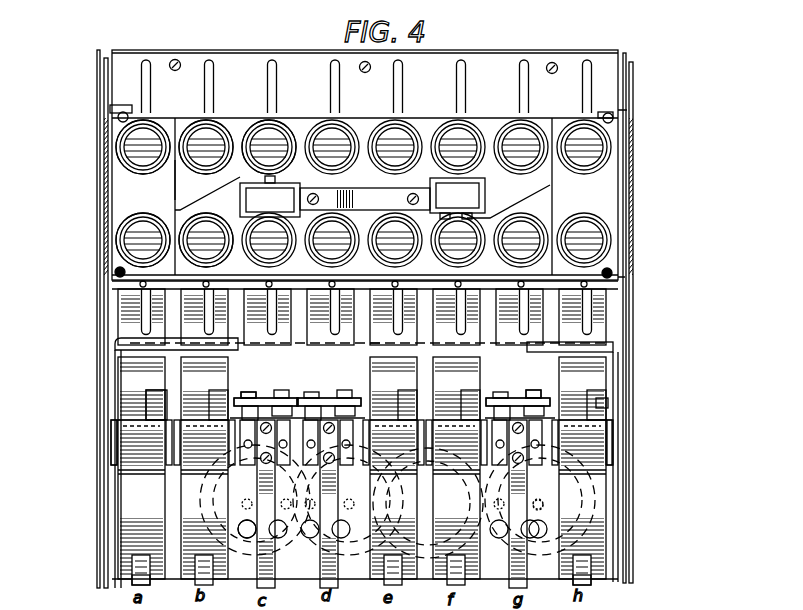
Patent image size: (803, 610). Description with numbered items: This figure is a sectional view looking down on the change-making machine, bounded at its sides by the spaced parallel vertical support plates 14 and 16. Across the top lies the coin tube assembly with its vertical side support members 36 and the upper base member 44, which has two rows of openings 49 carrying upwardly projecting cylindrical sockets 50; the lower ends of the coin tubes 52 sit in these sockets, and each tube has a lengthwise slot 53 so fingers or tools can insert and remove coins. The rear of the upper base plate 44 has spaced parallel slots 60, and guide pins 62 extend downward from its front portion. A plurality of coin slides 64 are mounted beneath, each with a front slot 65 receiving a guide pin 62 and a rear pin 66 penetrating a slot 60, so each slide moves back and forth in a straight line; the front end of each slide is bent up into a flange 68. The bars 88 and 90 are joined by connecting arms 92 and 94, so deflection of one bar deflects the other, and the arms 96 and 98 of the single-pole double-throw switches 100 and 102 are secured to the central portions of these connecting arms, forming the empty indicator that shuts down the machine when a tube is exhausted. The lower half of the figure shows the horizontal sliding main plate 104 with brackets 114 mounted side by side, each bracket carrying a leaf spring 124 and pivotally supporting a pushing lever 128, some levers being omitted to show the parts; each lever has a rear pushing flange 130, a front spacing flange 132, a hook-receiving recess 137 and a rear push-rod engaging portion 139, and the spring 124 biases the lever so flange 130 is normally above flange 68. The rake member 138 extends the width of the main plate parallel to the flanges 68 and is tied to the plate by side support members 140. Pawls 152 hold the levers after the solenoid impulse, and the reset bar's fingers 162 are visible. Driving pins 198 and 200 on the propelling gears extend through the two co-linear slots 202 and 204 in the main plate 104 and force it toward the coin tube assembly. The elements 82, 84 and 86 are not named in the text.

The support plate 14 is at (612, 403).
The support plate 16 is at (100, 420).
The vertical side support member 36 is at (102, 187).
The upper base member 44 is at (437, 80).
The openings 49 is at (132, 218).
The cylindrical socket 50 is at (117, 143).
The coin tube 52 is at (118, 167).
The slot 53 is at (268, 124).
The slot 60 is at (270, 80).
The guide pin 62 is at (380, 281).
The coin slide 64 is at (132, 308).
The slot 65 is at (268, 338).
The pin 66 is at (520, 113).
The flange 68 is at (372, 344).
The bracket 82 is at (108, 104).
The bracket 84 is at (630, 112).
The screw 86 is at (123, 112).
The bar 88 is at (322, 278).
The bar 90 is at (298, 118).
The connecting arm 92 is at (175, 176).
The connecting arm 94 is at (553, 225).
The switch arm 96 is at (204, 193).
The switch arm 98 is at (522, 203).
The single-pole double-throw switch 100 is at (258, 208).
The single-pole double-throw switch 102 is at (470, 204).
The sliding main plate 104 is at (498, 570).
The bracket 114 is at (115, 441).
The leaf spring 124 is at (125, 556).
The pushing lever 128 is at (130, 496).
The rear pushing flange 130 is at (118, 356).
The spacing flange 132 is at (120, 574).
The hook-receiving recess 137 is at (608, 405).
The rake member 138 is at (118, 340).
The rear portion 139 is at (125, 407).
The side support member 140 is at (125, 377).
The pawl 152 is at (272, 398).
The finger 162 is at (250, 397).
The driving pin 198 is at (247, 538).
The driving pin 200 is at (538, 540).
The slot 202 is at (280, 510).
The slot 204 is at (546, 520).